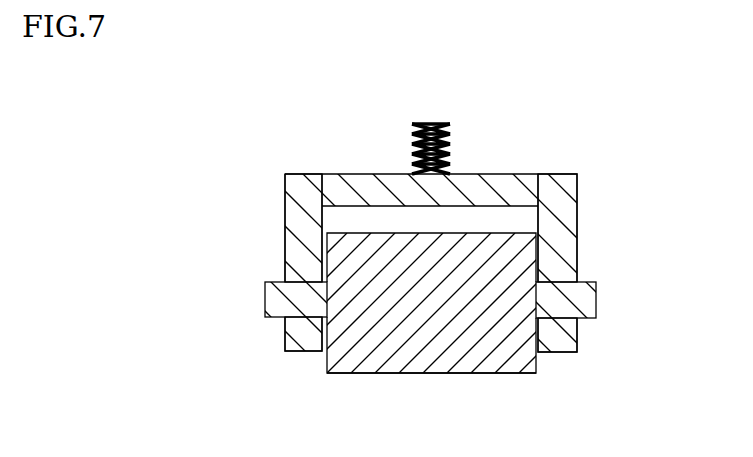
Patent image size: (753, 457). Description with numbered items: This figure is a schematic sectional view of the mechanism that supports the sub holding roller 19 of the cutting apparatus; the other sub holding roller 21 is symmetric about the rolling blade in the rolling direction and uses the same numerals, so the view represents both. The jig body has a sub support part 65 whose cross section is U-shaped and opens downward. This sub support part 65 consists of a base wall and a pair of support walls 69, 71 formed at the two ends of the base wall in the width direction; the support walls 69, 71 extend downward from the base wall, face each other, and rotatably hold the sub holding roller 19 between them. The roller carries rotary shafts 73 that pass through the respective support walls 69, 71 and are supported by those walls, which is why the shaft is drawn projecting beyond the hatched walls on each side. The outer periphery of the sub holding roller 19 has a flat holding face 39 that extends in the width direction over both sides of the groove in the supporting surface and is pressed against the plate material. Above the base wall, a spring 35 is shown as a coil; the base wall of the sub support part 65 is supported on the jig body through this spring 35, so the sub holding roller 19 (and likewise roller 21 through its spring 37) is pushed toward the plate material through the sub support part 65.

The sub holding roller 19 is at (433, 322).
The sub holding roller 21 is at (465, 348).
The spring 35 is at (446, 120).
The spring 37 is at (418, 123).
The holding face 39 is at (431, 404).
The sub support part 65 is at (376, 250).
The support wall 69 is at (285, 198).
The support wall 71 is at (577, 235).
The rotary shaft 73 is at (265, 295).